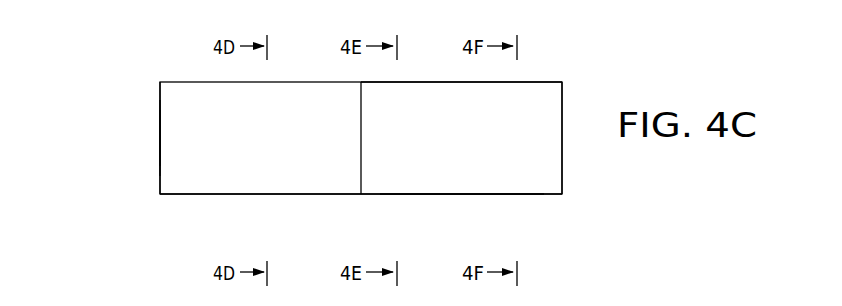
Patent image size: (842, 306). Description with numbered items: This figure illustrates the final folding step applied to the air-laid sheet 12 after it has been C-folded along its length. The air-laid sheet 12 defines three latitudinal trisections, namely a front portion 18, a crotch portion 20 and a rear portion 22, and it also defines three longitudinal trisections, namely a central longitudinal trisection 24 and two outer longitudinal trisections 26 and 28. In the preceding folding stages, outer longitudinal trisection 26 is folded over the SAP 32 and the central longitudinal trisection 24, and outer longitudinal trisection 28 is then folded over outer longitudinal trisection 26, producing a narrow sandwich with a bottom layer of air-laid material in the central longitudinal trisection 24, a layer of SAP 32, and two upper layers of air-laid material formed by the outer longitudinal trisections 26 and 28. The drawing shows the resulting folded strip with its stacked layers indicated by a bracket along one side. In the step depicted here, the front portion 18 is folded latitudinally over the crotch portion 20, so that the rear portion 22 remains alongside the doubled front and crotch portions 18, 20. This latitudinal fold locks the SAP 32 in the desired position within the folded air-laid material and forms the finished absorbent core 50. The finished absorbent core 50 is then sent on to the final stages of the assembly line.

The air-laid sheet 12 is at (214, 73).
The front portion 18 is at (562, 202).
The crotch portion 20 is at (462, 222).
The rear portion 22 is at (361, 202).
The central longitudinal trisection 24 is at (101, 138).
The outer longitudinal trisection 26 is at (101, 138).
The outer longitudinal trisection 28 is at (160, 83).
The SAP 32 is at (512, 118).
The finished absorbent core 50 is at (585, 194).